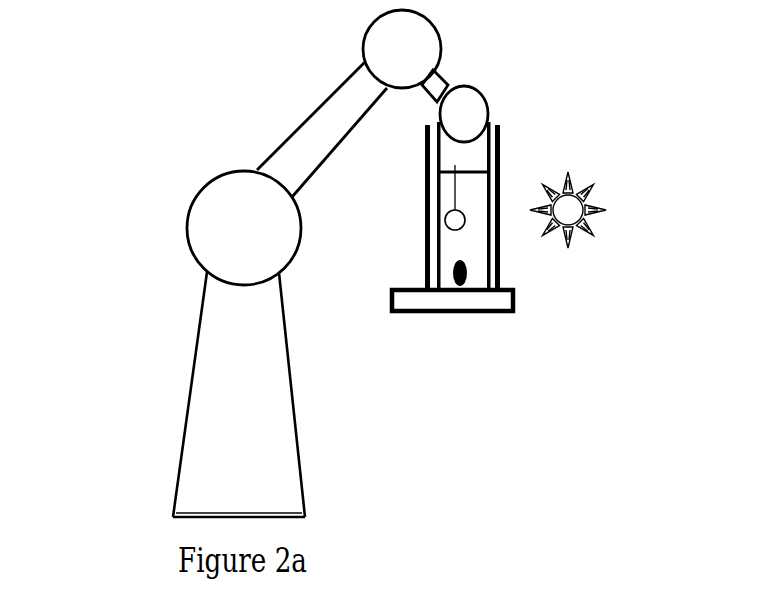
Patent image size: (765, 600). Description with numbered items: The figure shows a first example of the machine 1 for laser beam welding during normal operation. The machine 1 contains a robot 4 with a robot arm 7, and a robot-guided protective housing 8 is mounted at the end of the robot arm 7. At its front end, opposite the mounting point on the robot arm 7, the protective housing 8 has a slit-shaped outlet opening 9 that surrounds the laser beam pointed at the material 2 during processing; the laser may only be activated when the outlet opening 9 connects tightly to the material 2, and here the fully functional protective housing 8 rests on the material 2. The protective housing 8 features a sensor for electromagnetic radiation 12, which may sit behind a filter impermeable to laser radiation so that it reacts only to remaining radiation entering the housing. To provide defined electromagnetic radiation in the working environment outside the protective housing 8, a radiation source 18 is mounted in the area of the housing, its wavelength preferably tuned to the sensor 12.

The machine for laser beam welding 1 is at (140, 226).
The material 2 is at (480, 313).
The robot 4 is at (223, 413).
The robot arm 7 is at (315, 137).
The protective housing 8 is at (498, 252).
The outlet opening 9 is at (452, 287).
The sensor for electromagnetic radiation 12 is at (475, 188).
The radiation source 18 is at (615, 208).